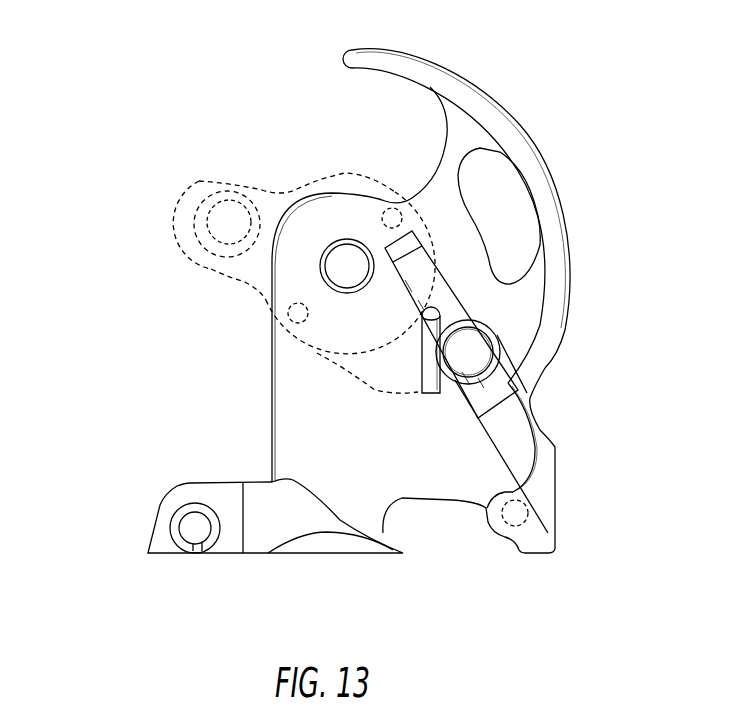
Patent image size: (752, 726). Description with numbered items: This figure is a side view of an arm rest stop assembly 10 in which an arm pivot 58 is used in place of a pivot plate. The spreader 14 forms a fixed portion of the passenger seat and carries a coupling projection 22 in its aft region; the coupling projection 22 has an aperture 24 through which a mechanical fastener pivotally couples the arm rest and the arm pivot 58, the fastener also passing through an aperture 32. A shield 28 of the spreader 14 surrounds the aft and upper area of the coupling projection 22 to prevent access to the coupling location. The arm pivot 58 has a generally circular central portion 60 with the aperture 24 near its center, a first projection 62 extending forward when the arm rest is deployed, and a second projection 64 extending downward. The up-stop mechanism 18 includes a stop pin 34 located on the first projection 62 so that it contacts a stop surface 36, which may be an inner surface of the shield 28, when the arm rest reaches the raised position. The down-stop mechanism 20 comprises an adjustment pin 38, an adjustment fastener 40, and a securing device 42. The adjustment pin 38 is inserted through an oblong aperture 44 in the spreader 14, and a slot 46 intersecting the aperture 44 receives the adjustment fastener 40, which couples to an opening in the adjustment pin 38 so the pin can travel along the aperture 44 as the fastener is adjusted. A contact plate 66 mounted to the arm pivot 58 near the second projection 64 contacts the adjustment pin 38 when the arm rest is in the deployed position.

The arm rest stop assembly 10 is at (258, 153).
The spreader 14 is at (437, 473).
The up-stop mechanism 18 is at (215, 285).
The down-stop mechanism 20 is at (522, 368).
The coupling projection 22 is at (282, 220).
The aperture 24 is at (347, 278).
The shield 28 is at (521, 131).
The aperture 32 is at (322, 253).
The stop pin 34 is at (200, 258).
The stop surface 36 is at (452, 128).
The adjustment pin 38 is at (465, 360).
The adjustment fastener 40 is at (491, 418).
The securing device 42 is at (443, 301).
The aperture 44 is at (432, 342).
The slot 46 is at (545, 474).
The arm pivot 58 is at (200, 175).
The central portion 60 is at (323, 178).
The first projection 62 is at (185, 195).
The second projection 64 is at (427, 318).
The contact plate 66 is at (444, 341).